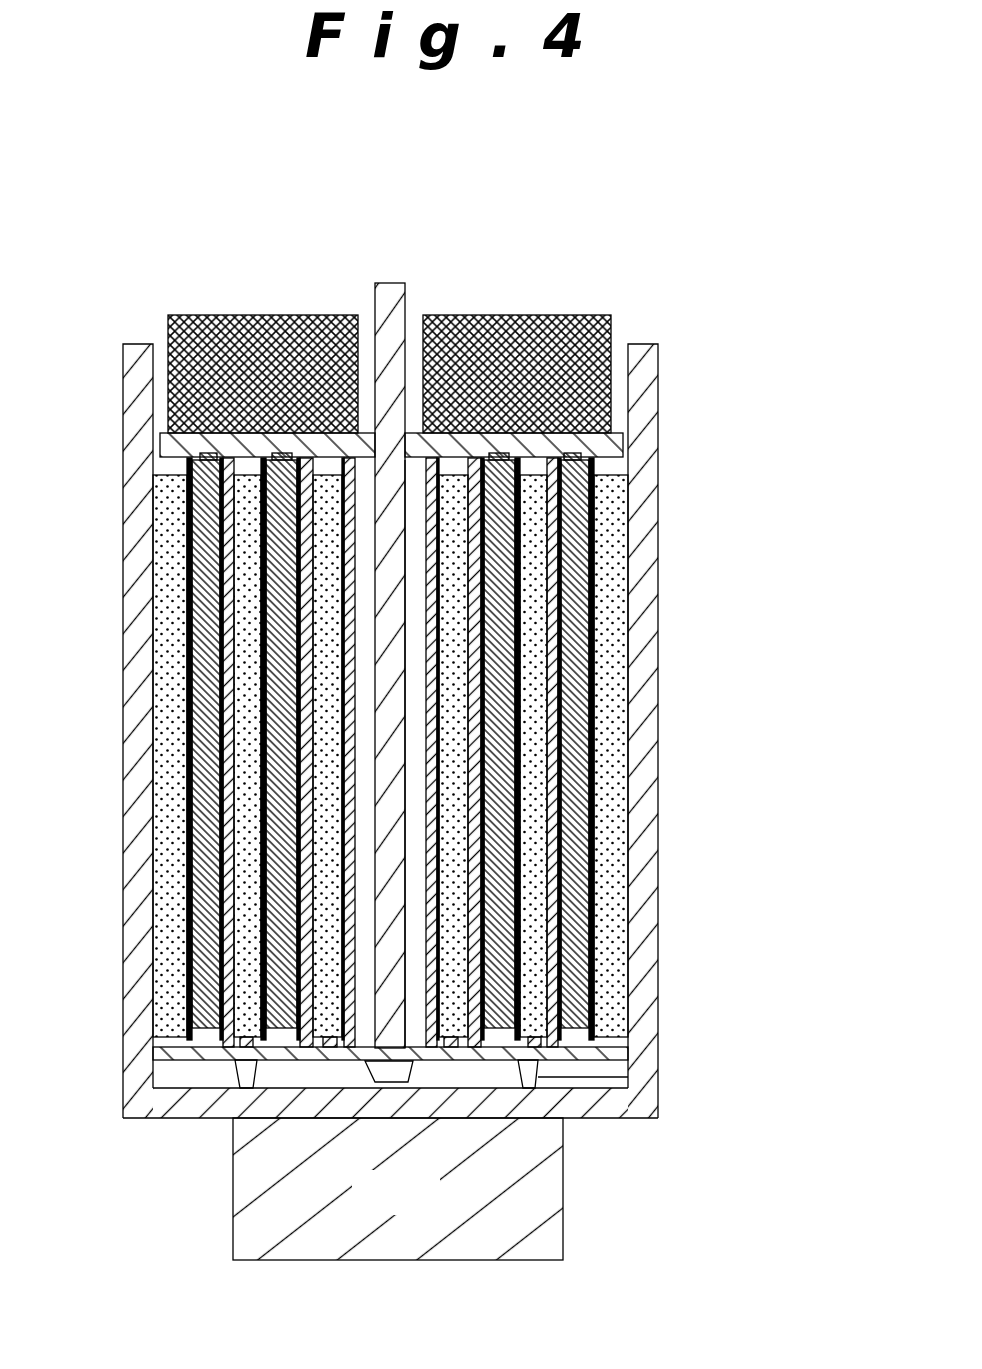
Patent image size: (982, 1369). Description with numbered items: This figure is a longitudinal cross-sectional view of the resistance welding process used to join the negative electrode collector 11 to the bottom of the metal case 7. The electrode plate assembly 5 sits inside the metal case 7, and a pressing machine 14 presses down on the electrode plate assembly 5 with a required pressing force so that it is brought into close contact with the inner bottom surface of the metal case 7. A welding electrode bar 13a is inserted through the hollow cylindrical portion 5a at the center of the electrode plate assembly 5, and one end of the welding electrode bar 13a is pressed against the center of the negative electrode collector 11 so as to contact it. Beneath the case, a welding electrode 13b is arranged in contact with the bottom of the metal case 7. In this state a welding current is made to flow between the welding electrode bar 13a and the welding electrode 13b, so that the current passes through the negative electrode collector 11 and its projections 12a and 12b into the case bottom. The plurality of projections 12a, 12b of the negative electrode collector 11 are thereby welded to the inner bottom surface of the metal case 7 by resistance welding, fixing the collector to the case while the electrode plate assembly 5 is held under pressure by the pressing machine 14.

The electrode plate assembly 5 is at (630, 792).
The hollow cylindrical portion 5a is at (409, 557).
The metal case 7 is at (617, 1122).
The negative electrode collector 11 is at (186, 1060).
The projection 12a is at (628, 1077).
The projection 12b is at (394, 1071).
The welding electrode bar 13a is at (392, 313).
The welding electrode 13b is at (398, 1189).
The pressing machine 14 is at (213, 328).